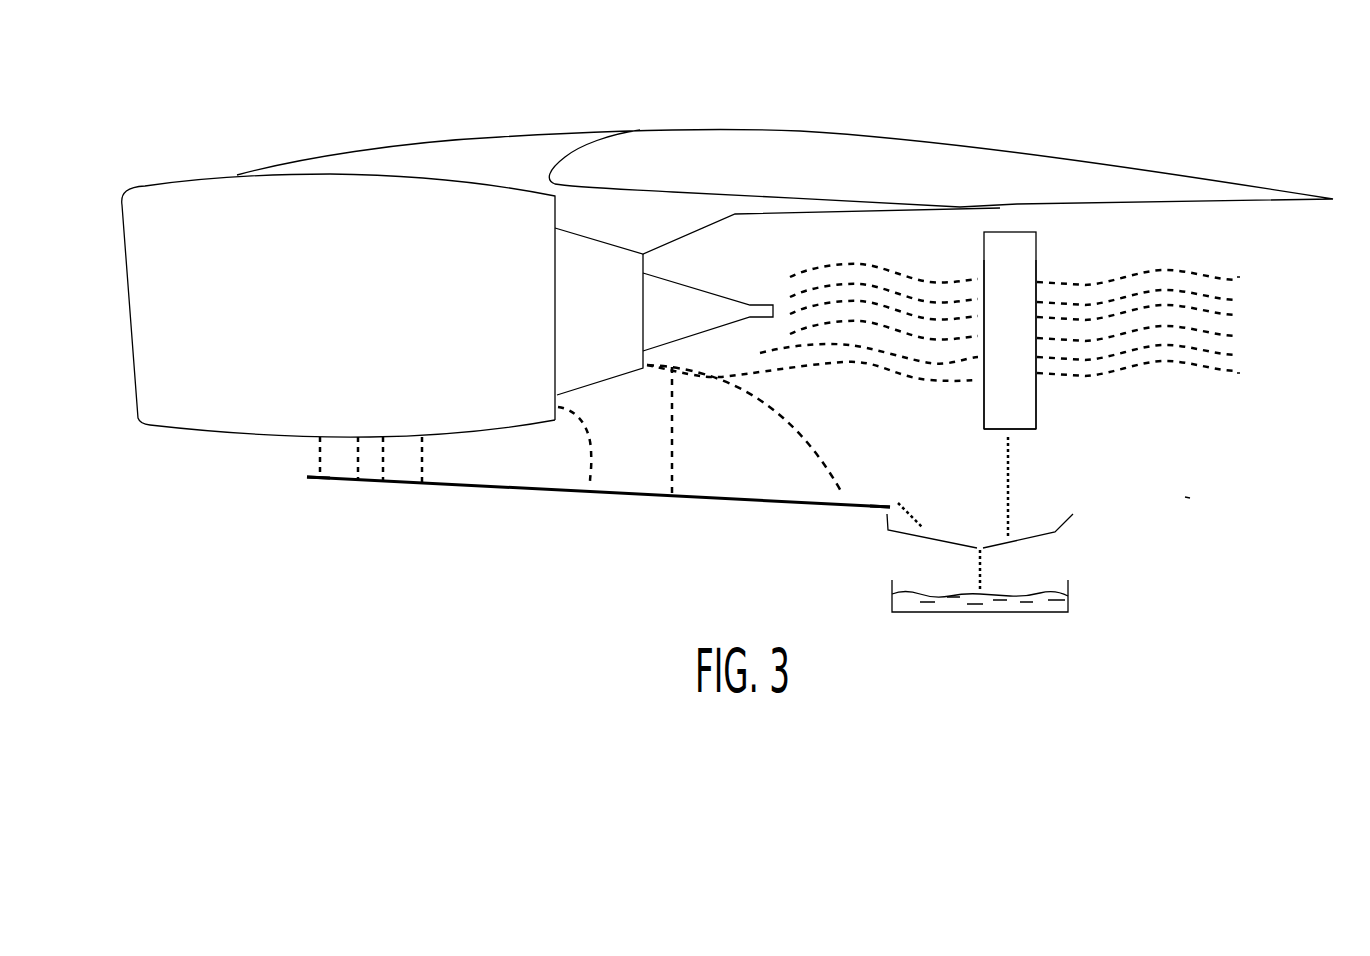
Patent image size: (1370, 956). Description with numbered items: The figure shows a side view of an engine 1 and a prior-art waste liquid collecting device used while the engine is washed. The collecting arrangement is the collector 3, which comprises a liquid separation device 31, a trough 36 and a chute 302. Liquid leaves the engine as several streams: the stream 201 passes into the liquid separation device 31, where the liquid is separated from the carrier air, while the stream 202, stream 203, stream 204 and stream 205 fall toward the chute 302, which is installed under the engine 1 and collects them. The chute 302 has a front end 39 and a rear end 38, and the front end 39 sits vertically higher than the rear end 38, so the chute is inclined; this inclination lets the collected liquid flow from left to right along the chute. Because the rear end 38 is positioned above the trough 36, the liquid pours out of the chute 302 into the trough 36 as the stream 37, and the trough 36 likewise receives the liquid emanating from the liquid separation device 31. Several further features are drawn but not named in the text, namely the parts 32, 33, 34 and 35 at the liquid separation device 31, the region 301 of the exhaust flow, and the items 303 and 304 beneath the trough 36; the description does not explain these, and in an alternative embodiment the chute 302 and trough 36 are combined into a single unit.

The engine 1 is at (172, 208).
The collector 3 is at (1184, 496).
The liquid separation device 31 is at (1009, 245).
The inlet side 32 is at (984, 400).
The outlet side 33 is at (1037, 407).
The discharge opening 34 is at (1023, 430).
The particle stream 35 is at (1006, 486).
The trough 36 is at (1055, 527).
The stream 37 is at (913, 500).
The rear end 38 is at (870, 507).
The front end 39 is at (300, 477).
The stream 201 is at (940, 280).
The stream 202 is at (798, 438).
The stream 203 is at (674, 455).
The stream 204 is at (595, 482).
The stream 205 is at (357, 458).
The exhaust plume 301 is at (1203, 372).
The chute 302 is at (488, 490).
The collecting container 303 is at (1072, 605).
The collected sample 304 is at (987, 577).